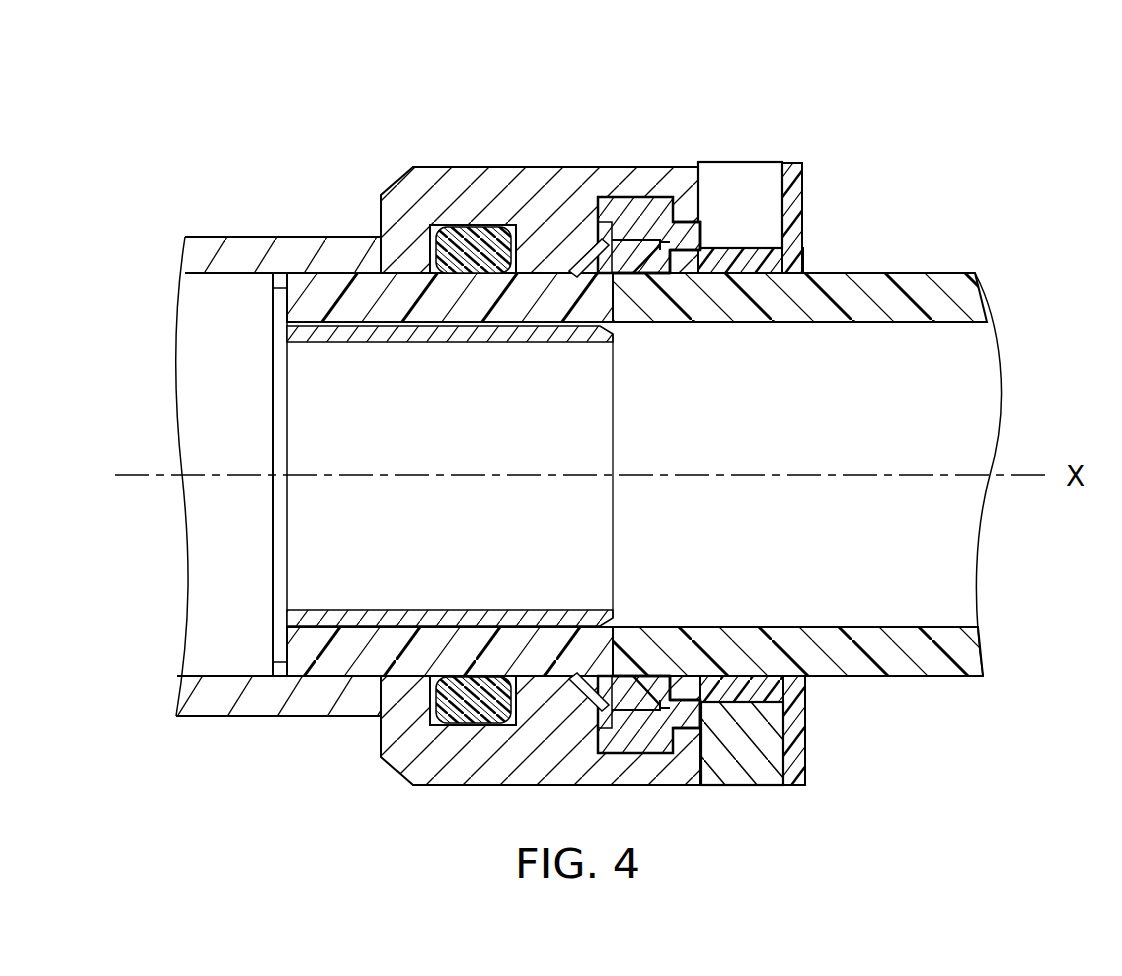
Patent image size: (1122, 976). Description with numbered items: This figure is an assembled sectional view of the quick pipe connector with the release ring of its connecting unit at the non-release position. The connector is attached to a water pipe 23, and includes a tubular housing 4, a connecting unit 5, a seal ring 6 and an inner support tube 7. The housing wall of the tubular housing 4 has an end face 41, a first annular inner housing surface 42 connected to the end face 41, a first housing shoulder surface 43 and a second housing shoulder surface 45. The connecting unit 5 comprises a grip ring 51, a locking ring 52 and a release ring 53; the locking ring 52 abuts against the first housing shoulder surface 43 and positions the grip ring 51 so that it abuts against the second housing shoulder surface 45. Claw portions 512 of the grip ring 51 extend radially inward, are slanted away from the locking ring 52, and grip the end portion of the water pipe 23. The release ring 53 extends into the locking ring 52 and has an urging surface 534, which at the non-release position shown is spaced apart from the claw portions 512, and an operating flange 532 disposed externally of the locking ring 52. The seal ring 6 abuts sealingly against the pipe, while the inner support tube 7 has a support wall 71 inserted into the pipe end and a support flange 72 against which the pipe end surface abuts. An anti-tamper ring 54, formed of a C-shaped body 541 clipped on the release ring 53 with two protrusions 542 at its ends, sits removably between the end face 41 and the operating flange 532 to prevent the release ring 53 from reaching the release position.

The tubular housing 4 is at (490, 164).
The connecting unit 5 is at (831, 434).
The seal ring 6 is at (462, 250).
The inner support tube 7 is at (270, 316).
The support wall 71 is at (345, 333).
The support flange 72 is at (299, 279).
The water pipe 23 is at (870, 273).
The end face 41 is at (692, 226).
The first annular inner housing surface 42 is at (688, 262).
The first housing shoulder surface 43 is at (652, 262).
The second housing shoulder surface 45 is at (634, 386).
The grip ring 51 is at (606, 258).
The locking ring 52 is at (626, 200).
The claw portions 512 is at (580, 262).
The urging surface 534 is at (650, 250).
The release ring 53 is at (811, 152).
The operating flange 532 is at (796, 191).
The protrusions 542 is at (755, 175).
The anti-tamper ring 54 is at (801, 756).
The C-shaped body 541 is at (740, 750).